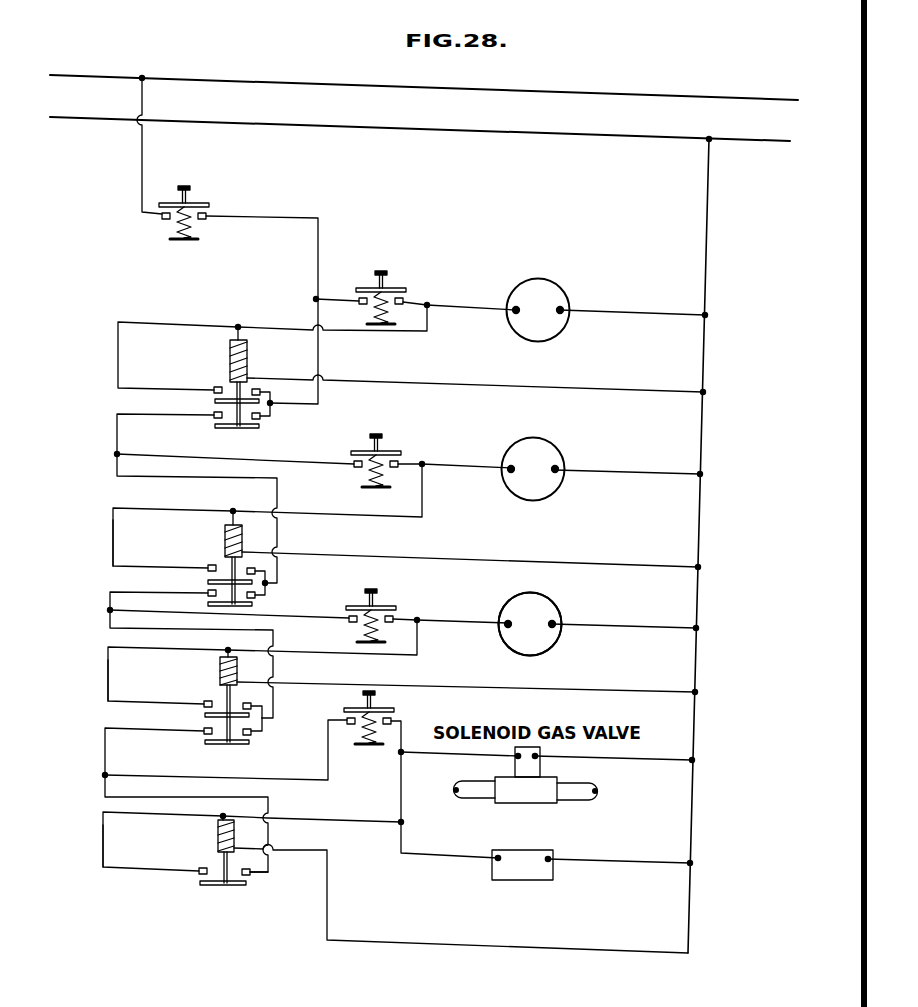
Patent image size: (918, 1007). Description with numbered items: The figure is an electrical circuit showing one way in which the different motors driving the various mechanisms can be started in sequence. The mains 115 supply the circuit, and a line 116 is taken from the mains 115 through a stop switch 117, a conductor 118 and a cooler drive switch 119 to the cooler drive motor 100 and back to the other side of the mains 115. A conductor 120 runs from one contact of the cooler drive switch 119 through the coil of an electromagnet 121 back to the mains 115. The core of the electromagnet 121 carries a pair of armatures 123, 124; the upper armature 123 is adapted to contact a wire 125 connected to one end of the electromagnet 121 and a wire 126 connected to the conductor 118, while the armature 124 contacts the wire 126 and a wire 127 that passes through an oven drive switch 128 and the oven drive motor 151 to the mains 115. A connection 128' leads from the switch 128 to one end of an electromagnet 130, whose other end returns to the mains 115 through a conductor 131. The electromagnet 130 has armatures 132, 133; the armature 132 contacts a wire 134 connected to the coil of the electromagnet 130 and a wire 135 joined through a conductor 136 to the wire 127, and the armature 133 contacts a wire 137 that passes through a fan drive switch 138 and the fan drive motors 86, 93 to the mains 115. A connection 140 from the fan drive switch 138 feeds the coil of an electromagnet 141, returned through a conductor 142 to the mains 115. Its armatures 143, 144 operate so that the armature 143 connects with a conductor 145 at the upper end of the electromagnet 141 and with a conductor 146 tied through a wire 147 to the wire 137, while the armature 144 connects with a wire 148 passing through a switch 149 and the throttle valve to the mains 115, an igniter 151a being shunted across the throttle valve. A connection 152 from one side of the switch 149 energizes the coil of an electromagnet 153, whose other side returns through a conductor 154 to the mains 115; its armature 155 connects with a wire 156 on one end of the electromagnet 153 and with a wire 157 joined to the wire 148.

The mains 115 is at (298, 80).
The line 116 is at (140, 143).
The stop switch 117 is at (168, 222).
The conductor 118 is at (318, 244).
The cooler drive switch 119 is at (390, 290).
The cooler drive motor 100 is at (542, 313).
The conductor 120 is at (298, 330).
The electromagnet 121 is at (230, 352).
The armature 123 is at (214, 402).
The armature 124 is at (214, 427).
The wire 125 is at (181, 326).
The wire 126 is at (303, 404).
The wire 127 is at (116, 442).
The oven drive switch 128 is at (388, 456).
The connection 128' is at (290, 516).
The oven drive motor 151 is at (540, 472).
The electromagnet 130 is at (223, 532).
The conductor 131 is at (455, 562).
The armature 132 is at (208, 582).
The armature 133 is at (208, 604).
The wire 134 is at (164, 567).
The wire 135 is at (268, 596).
The conductor 136 is at (268, 577).
The wire 137 is at (160, 592).
The fan drive switch 138 is at (384, 612).
The fan drive motor 86 is at (556, 615).
The fan drive motor 93 is at (530, 624).
The connection 140 is at (417, 642).
The electromagnet 141 is at (220, 665).
The conductor 142 is at (494, 694).
The armature 143 is at (205, 715).
The armature 144 is at (205, 742).
The conductor 145 is at (156, 702).
The conductor 146 is at (262, 734).
The wire 147 is at (262, 712).
The wire 148 is at (140, 731).
The switch 149 is at (384, 716).
The connection 152 is at (370, 820).
The electromagnet 153 is at (218, 832).
The conductor 154 is at (465, 948).
The armature 155 is at (233, 886).
The wire 156 is at (156, 872).
The wire 157 is at (268, 866).
The igniter 151a is at (532, 882).